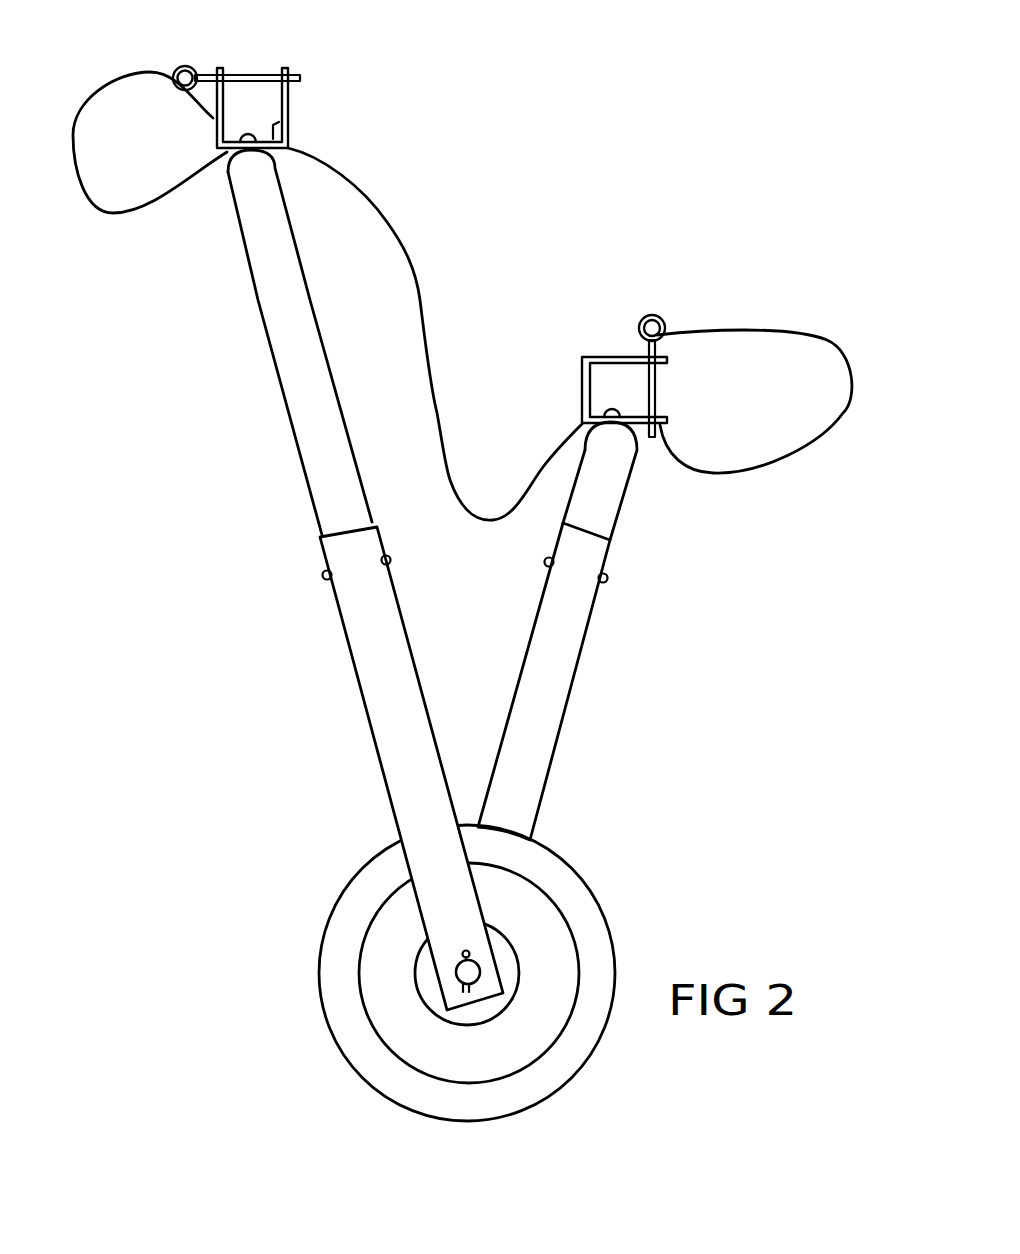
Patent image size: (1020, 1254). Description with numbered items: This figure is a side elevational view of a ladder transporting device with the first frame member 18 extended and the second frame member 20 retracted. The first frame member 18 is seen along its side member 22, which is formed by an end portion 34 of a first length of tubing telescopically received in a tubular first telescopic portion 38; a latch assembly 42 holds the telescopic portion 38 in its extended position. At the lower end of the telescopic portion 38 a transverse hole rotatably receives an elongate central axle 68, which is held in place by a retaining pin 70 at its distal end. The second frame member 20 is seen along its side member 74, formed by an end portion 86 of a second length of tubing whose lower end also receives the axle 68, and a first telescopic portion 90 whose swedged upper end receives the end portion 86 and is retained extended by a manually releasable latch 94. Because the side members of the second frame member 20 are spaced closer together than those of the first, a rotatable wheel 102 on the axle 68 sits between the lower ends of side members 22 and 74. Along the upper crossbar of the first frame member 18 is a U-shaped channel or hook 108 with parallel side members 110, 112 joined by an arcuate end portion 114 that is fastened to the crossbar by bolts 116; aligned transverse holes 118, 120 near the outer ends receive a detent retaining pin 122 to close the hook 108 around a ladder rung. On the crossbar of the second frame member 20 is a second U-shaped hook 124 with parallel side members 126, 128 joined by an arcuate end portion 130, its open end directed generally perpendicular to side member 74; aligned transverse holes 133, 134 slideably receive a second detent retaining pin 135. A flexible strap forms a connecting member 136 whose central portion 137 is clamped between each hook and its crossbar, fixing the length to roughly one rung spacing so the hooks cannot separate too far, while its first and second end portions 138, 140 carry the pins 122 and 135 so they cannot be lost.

The first frame member 18 is at (329, 580).
The second frame member 20 is at (608, 632).
The side member 22 is at (271, 342).
The end portion 34 is at (283, 400).
The first telescopic portion 38 is at (352, 668).
The latch assembly 42 is at (321, 573).
The central axle 68 is at (455, 970).
The retaining pin 70 is at (461, 951).
The side member 74 is at (612, 542).
The end portion 86 is at (624, 532).
The first telescopic portion 90 is at (560, 767).
The manually releasable latch 94 is at (608, 583).
The rotatable wheel 102 is at (325, 1017).
The U-shaped channel or hook 108 is at (284, 75).
The side member 110 is at (213, 118).
The side member 112 is at (292, 102).
The arcuate end portion 114 is at (276, 124).
The bolt 116 is at (251, 132).
The transverse hole 118 is at (214, 68).
The transverse hole 120 is at (287, 68).
The retaining pin 122 is at (238, 72).
The second U-shaped hook 124 is at (641, 413).
The side member 126 is at (603, 355).
The side member 128 is at (657, 438).
The arcuate end portion 130 is at (582, 400).
The transverse hole 133 is at (657, 350).
The transverse hole 134 is at (668, 433).
The second detent retaining pin 135 is at (658, 387).
The connecting member 136 is at (414, 262).
The central portion 137 is at (387, 222).
The first end portion 138 is at (140, 210).
The second end portion 140 is at (800, 460).